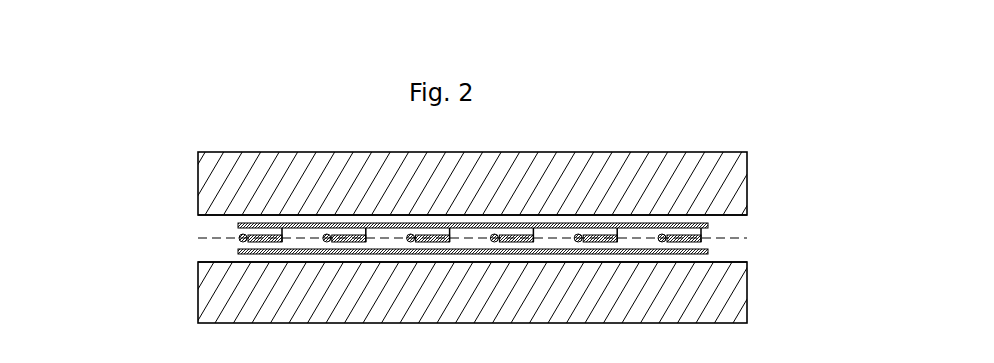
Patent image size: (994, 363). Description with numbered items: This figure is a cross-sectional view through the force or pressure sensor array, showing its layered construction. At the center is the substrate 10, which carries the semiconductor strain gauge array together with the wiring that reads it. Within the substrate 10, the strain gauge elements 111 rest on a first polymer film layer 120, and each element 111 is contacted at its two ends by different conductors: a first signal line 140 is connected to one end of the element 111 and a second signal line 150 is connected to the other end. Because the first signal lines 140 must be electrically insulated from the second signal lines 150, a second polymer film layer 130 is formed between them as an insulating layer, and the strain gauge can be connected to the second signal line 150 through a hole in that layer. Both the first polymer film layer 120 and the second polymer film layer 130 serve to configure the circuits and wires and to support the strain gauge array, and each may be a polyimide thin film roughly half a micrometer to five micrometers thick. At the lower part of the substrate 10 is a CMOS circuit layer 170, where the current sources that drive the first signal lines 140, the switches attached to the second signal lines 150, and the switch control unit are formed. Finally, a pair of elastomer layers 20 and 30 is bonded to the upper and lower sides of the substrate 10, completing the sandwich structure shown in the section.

The substrate 10 is at (115, 167).
The elastomer layer 20 is at (742, 288).
The elastomer layer 30 is at (742, 182).
The element 111 is at (259, 243).
The first polymer film layer 120 is at (296, 243).
The second polymer film layer 130 is at (258, 232).
The first signal line 140 is at (239, 238).
The second signal line 150 is at (268, 223).
The CMOS circuit layer 170 is at (244, 250).